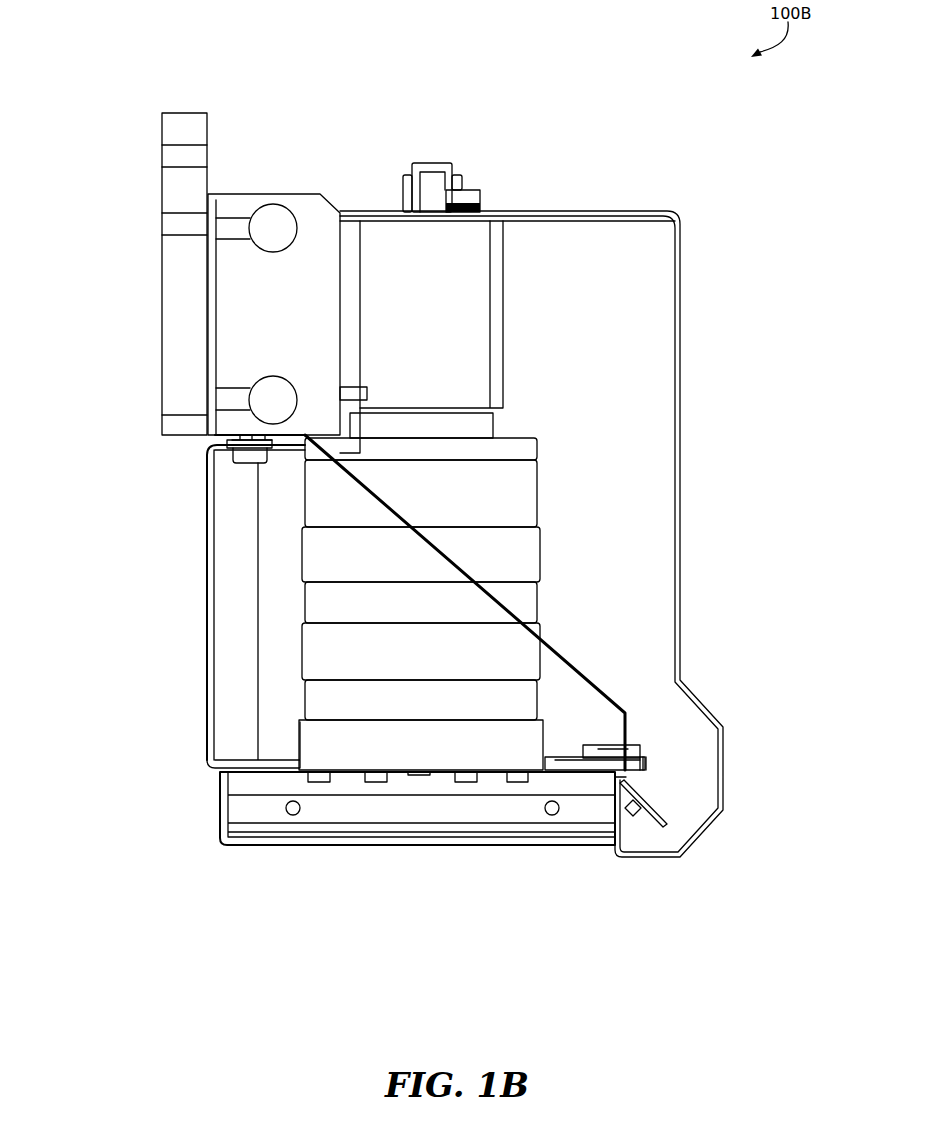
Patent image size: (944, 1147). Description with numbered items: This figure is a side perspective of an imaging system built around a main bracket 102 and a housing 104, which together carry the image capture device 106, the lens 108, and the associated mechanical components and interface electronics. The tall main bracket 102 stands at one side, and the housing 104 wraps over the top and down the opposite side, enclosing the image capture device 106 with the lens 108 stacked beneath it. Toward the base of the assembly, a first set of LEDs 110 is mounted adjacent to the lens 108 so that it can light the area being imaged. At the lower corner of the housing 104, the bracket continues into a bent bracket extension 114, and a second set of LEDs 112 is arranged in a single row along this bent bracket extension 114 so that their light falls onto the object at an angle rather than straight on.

The main bracket 102 is at (162, 272).
The housing 104 is at (565, 211).
The image capture device 106 is at (505, 312).
The lens 108 is at (540, 570).
The first set of LEDs 110 is at (332, 777).
The second set of LEDs 112 is at (636, 818).
The bent bracket extension 114 is at (655, 818).